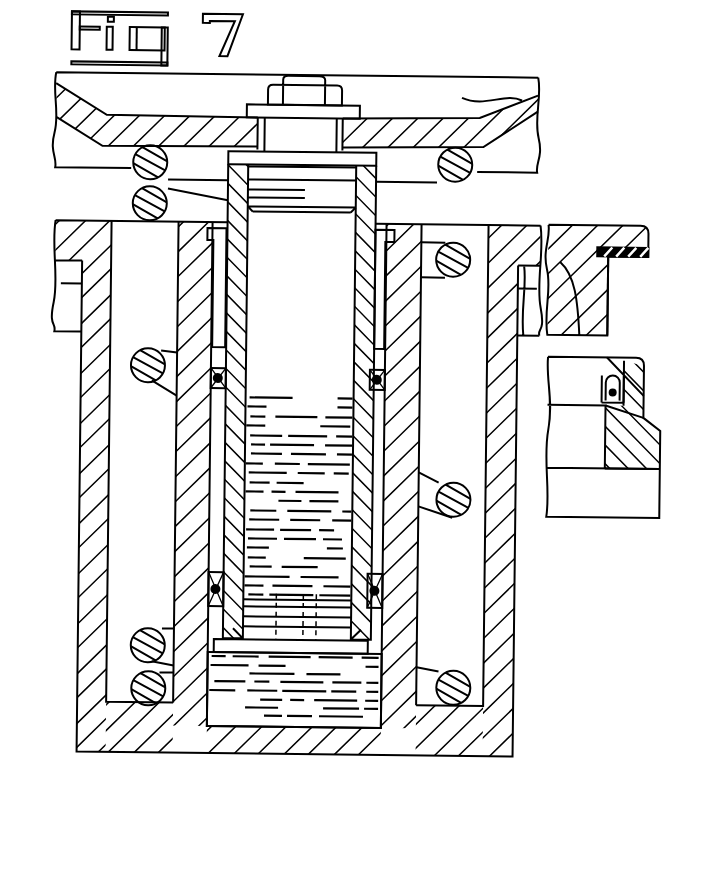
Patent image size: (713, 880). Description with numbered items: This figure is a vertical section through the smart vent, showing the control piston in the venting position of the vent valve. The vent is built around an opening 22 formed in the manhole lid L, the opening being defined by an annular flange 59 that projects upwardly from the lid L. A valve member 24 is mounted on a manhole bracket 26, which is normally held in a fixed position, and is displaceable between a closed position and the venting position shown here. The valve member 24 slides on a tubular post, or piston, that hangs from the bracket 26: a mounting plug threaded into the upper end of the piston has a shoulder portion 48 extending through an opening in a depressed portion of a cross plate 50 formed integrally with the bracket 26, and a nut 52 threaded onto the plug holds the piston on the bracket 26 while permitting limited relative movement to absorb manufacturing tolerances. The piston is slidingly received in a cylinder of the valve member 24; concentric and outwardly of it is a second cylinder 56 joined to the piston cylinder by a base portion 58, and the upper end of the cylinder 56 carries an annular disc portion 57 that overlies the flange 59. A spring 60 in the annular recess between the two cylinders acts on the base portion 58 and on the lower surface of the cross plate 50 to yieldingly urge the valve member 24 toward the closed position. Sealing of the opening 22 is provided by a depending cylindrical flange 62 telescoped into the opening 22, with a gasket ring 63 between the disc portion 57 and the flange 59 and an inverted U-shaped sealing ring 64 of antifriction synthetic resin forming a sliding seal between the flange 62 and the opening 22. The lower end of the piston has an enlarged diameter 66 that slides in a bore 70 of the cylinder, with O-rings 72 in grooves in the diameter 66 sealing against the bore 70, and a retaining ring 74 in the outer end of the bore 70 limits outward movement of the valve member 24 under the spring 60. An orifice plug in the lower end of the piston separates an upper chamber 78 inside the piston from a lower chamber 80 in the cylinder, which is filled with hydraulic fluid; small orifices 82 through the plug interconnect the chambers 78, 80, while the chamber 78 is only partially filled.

The vent opening 22 is at (607, 437).
The valve member 24 is at (509, 207).
The manhole bracket 26 is at (476, 66).
The shoulder portion 48 is at (254, 130).
The cross plate 50 is at (528, 99).
The nut 52 is at (334, 82).
The second cylinder 56 is at (80, 465).
The annular disc portion 57 is at (647, 238).
The base portion 58 is at (469, 674).
The annular flange 59 is at (643, 369).
The spring 60 is at (130, 198).
The cylindrical sealing flange 62 is at (606, 294).
The gasket ring 63 is at (626, 251).
The sealing ring 64 is at (596, 368).
The enlarged diameter 66 is at (188, 440).
The bore 70 is at (380, 252).
The O-rings 72 is at (214, 371).
The retaining ring 74 is at (216, 264).
The upper chamber 78 is at (298, 464).
The lower chamber 80 is at (294, 690).
The orifices 82 is at (291, 606).
The manhole lid L is at (630, 451).